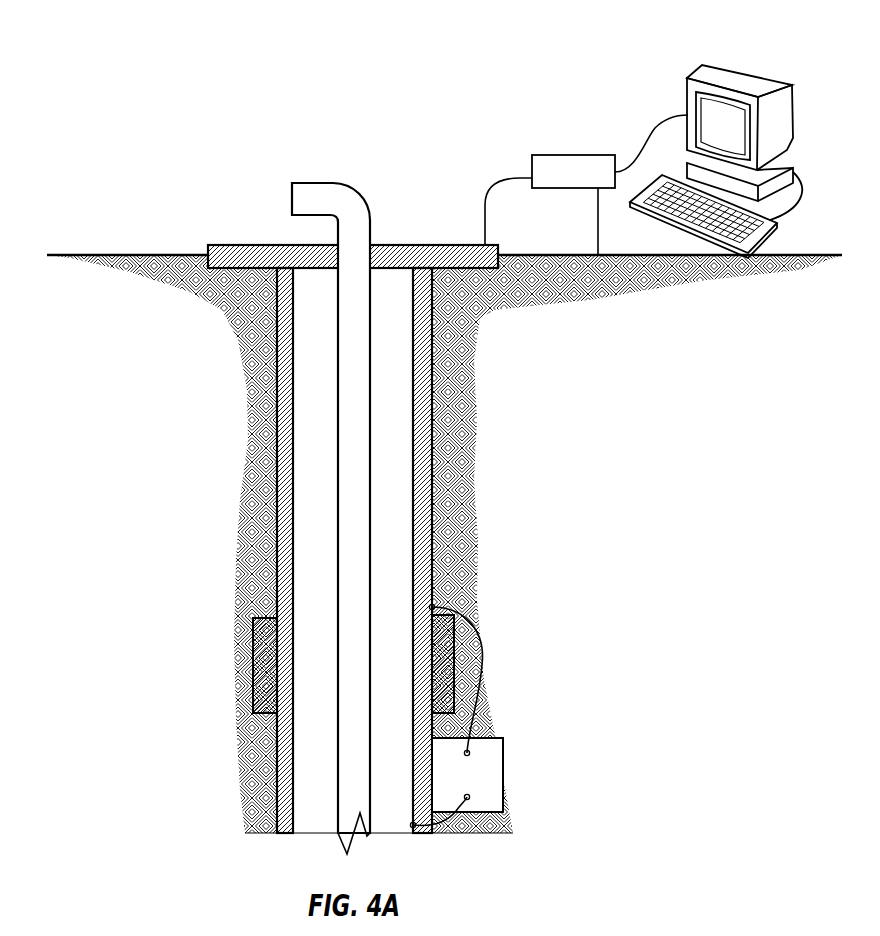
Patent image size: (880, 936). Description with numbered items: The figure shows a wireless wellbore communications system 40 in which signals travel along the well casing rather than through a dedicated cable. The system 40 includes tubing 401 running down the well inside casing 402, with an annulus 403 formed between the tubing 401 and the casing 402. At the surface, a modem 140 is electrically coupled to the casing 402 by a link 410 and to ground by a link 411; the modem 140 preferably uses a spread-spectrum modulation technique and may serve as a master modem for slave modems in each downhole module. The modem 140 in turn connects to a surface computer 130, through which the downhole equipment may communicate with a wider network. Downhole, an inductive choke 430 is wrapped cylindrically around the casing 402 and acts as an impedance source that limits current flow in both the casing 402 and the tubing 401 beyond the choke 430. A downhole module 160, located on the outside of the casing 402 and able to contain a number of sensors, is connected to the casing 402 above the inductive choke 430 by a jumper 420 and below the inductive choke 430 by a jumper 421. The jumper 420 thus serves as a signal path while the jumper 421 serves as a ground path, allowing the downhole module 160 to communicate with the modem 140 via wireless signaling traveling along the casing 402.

The wireless communications system 40 is at (208, 197).
The tubing 401 is at (333, 183).
The casing 402 is at (277, 385).
The annulus 403 is at (395, 490).
The link 410 is at (485, 215).
The link 411 is at (598, 243).
The modem 140 is at (575, 155).
The surface computer 130 is at (742, 70).
The inductive choke 430 is at (253, 665).
The jumper 420 is at (481, 665).
The jumper 421 is at (460, 812).
The downhole module 160 is at (503, 773).